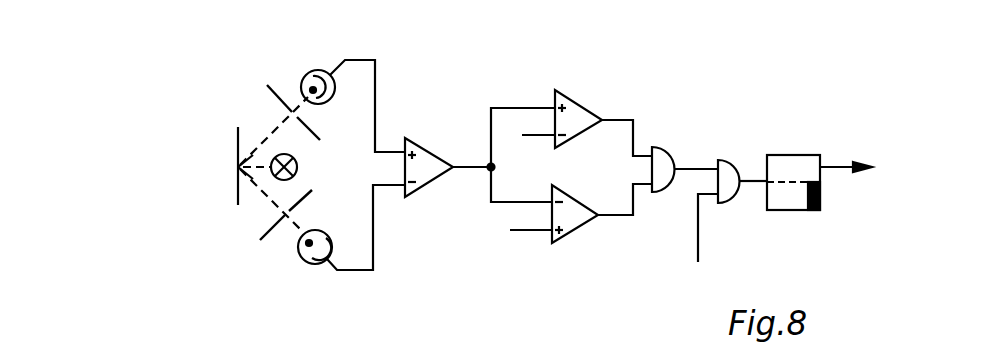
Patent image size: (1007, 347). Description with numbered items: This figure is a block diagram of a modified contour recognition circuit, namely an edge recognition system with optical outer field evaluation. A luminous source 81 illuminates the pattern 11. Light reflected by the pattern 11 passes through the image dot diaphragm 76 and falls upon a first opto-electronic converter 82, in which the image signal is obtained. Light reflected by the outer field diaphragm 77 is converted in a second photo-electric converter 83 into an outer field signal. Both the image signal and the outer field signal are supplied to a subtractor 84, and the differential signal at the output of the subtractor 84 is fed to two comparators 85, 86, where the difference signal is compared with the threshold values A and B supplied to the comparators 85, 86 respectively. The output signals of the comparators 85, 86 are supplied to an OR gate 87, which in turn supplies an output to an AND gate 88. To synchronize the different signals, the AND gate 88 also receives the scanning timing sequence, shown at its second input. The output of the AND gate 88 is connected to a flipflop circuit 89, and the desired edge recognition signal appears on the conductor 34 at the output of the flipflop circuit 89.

The pattern 11 is at (240, 138).
The image dot diaphragm 76 is at (275, 83).
The outer field diaphragm 77 is at (269, 233).
The luminous source 81 is at (297, 166).
The first opto-electronic converter 82 is at (313, 69).
The second photo-electric converter 83 is at (332, 230).
The subtractor 84 is at (422, 90).
The comparator 85 is at (577, 230).
The comparator 86 is at (590, 117).
The OR gate 87 is at (672, 162).
The AND gate 88 is at (728, 205).
The flipflop circuit 89 is at (783, 170).
The conductor 34 is at (835, 163).